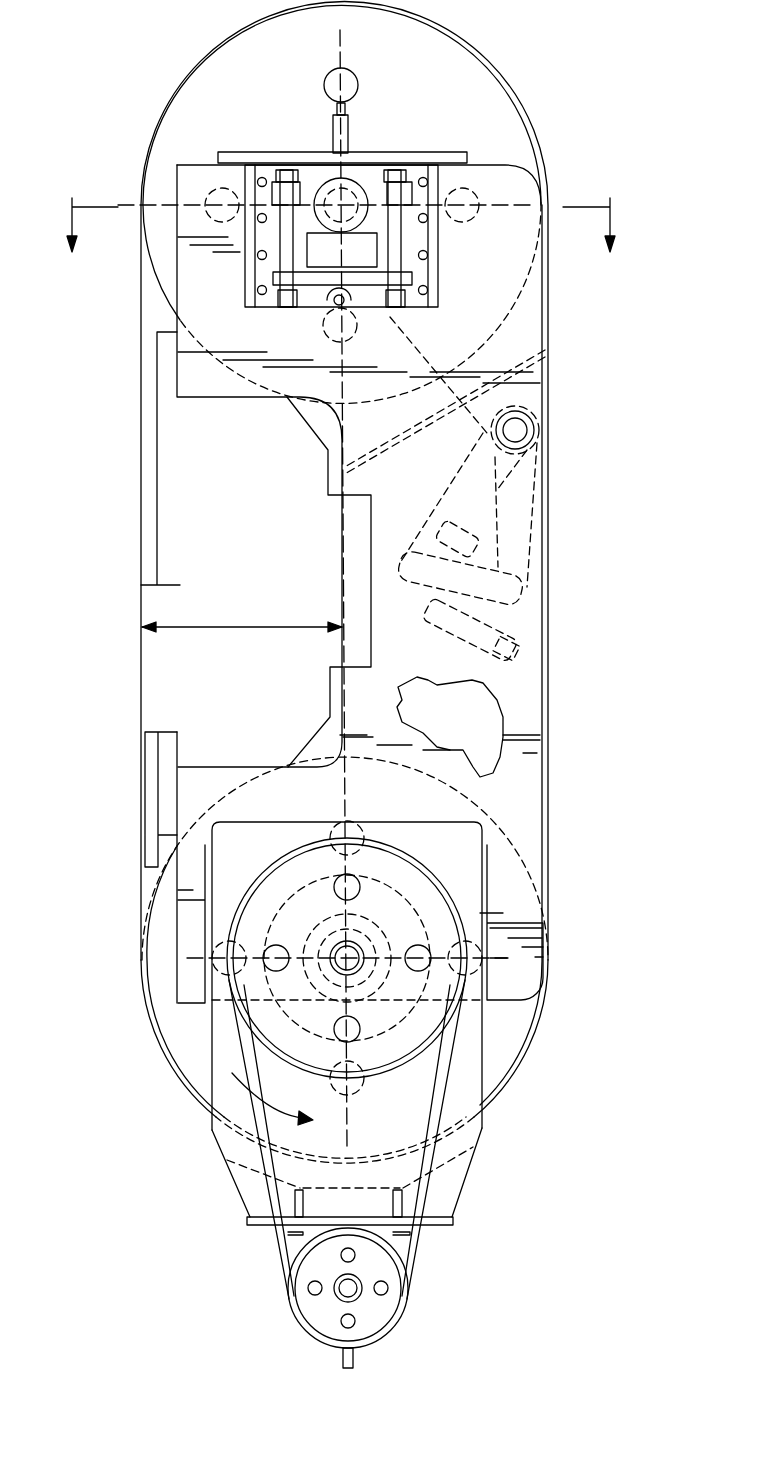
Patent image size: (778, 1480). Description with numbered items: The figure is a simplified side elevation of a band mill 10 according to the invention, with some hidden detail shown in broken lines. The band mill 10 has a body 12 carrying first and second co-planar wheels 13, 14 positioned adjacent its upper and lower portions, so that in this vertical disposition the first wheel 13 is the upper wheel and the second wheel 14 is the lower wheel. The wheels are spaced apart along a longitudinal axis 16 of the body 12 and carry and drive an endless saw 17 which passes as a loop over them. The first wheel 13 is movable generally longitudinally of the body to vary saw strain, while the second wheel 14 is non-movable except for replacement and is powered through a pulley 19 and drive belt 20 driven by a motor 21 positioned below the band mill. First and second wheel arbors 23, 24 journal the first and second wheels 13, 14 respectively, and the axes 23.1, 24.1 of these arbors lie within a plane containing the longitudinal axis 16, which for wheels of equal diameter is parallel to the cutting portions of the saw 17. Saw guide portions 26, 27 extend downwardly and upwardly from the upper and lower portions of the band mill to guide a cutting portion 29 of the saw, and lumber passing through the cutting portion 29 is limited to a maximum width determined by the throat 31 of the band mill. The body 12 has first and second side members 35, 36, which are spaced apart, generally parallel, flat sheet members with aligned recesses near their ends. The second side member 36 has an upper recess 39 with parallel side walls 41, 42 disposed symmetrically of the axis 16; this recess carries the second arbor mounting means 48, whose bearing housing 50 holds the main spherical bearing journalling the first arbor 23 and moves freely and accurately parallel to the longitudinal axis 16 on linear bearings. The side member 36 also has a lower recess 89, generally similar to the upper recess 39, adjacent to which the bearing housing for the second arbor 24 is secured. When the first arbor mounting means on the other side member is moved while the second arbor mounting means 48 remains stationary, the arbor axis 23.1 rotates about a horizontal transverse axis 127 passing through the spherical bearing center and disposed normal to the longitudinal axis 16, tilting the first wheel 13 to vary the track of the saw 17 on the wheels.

The band mill 10 is at (359, 684).
The body 12 is at (407, 582).
The first wheel 13 is at (470, 70).
The second wheel 14 is at (505, 1043).
The longitudinal axis 16 is at (347, 797).
The endless saw 17 is at (142, 680).
The pulley 19 is at (393, 870).
The drive belt 20 is at (447, 1117).
The motor 21 is at (398, 1323).
The first wheel arbor 23 is at (348, 185).
The axis of the first wheel arbor 23.1 is at (330, 187).
The second wheel arbor 24 is at (352, 965).
The axis of the second wheel arbor 24.1 is at (333, 923).
The saw guide portion 26 is at (177, 572).
The saw guide portion 27 is at (177, 757).
The cutting portion 29 is at (145, 703).
The throat 31 is at (225, 625).
The first side member 35 is at (475, 735).
The second side member 36 is at (522, 773).
The upper recess 39 is at (377, 110).
The side wall 41 is at (248, 272).
The side wall 42 is at (438, 240).
The second arbor mounting means 48 is at (306, 111).
The bearing housing 50 is at (372, 177).
The lower recess 89 is at (487, 903).
The transverse axis 127 is at (488, 205).